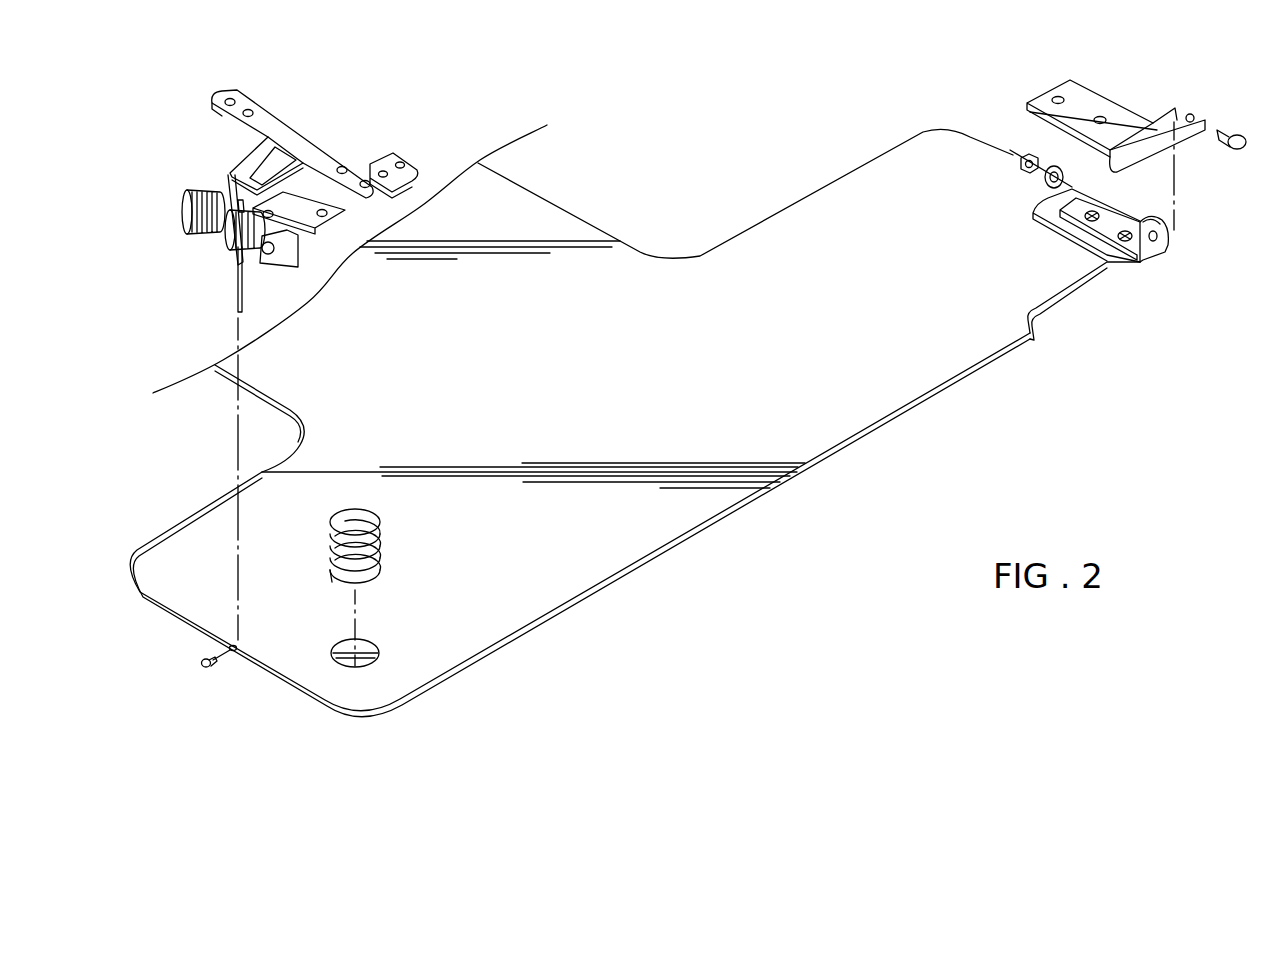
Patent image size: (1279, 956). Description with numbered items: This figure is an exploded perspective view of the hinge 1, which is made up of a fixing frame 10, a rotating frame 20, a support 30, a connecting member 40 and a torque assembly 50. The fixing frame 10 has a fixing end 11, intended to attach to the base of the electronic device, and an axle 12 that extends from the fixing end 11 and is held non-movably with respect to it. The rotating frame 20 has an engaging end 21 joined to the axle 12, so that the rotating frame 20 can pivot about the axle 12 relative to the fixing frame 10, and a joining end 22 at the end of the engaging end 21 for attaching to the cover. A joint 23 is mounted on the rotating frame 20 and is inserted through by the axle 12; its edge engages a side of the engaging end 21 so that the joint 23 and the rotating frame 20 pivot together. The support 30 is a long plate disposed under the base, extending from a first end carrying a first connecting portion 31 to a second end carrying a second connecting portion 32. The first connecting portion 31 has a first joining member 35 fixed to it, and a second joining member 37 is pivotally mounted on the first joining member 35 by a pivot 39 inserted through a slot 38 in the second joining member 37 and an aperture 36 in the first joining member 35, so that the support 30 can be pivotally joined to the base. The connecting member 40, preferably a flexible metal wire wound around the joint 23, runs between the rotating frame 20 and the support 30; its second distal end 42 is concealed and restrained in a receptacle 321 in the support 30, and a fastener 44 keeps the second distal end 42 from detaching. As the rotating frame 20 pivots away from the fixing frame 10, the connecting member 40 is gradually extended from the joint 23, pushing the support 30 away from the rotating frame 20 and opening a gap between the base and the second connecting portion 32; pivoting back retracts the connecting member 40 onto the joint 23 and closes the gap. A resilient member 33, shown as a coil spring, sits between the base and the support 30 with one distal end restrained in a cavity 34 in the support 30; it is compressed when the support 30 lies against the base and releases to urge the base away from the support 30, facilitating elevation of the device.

The hinge 1 is at (388, 70).
The fixing frame 10 is at (411, 142).
The fixing end 11 is at (388, 153).
The axle 12 is at (264, 251).
The rotating frame 20 is at (330, 118).
The engaging end 21 is at (232, 211).
The joining end 22 is at (248, 97).
The joint 23 is at (228, 234).
The support 30 is at (738, 528).
The first connecting portion 31 is at (1113, 258).
The second connecting portion 32 is at (287, 660).
The resilient member 33 is at (375, 550).
The cavity 34 is at (380, 653).
The first joining member 35 is at (1152, 258).
The aperture 36 is at (1158, 236).
The second joining member 37 is at (1085, 95).
The slot 38 is at (1190, 112).
The pivot 39 is at (1238, 134).
The connecting member 40 is at (229, 313).
The second distal end 42 is at (236, 307).
The fastener 44 is at (212, 667).
The torque assembly 50 is at (202, 186).
The receptacle 321 is at (237, 638).